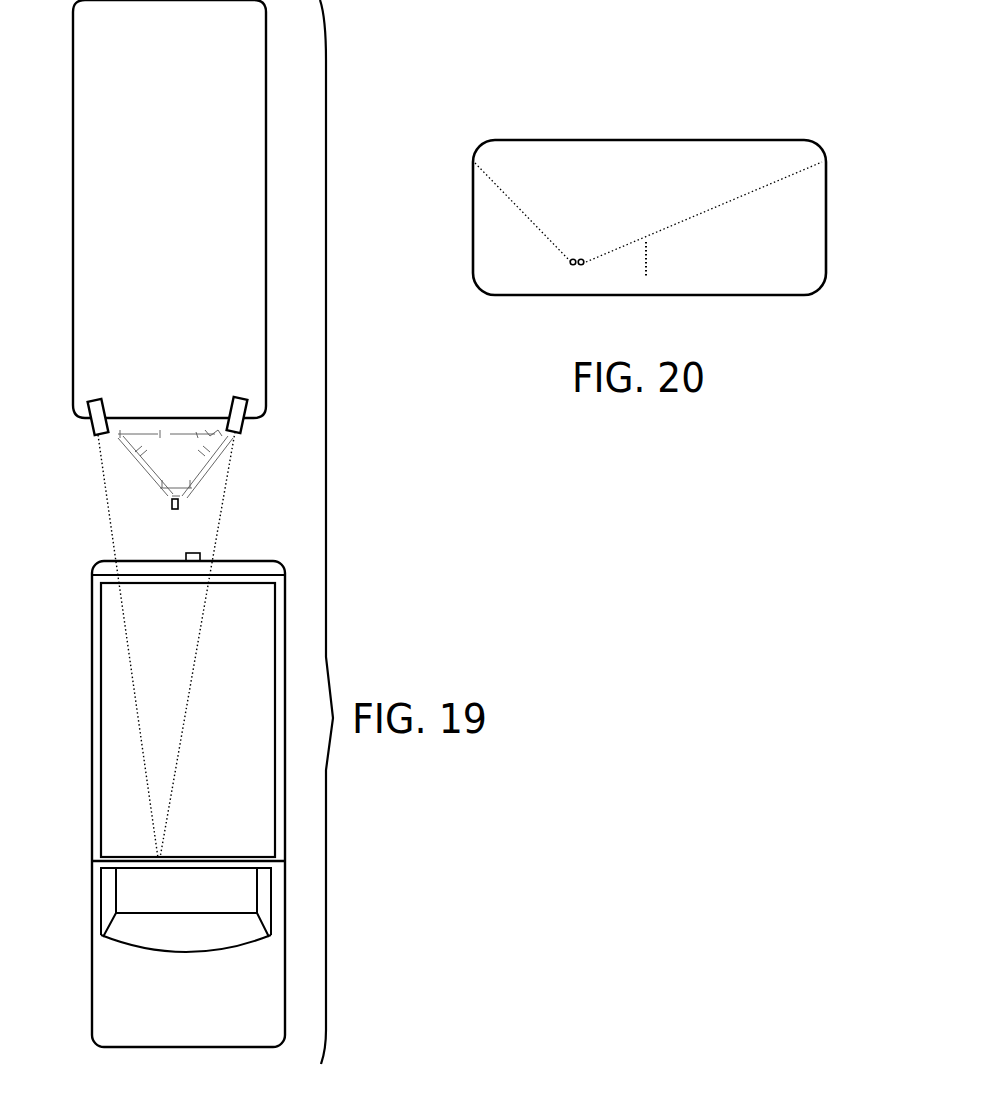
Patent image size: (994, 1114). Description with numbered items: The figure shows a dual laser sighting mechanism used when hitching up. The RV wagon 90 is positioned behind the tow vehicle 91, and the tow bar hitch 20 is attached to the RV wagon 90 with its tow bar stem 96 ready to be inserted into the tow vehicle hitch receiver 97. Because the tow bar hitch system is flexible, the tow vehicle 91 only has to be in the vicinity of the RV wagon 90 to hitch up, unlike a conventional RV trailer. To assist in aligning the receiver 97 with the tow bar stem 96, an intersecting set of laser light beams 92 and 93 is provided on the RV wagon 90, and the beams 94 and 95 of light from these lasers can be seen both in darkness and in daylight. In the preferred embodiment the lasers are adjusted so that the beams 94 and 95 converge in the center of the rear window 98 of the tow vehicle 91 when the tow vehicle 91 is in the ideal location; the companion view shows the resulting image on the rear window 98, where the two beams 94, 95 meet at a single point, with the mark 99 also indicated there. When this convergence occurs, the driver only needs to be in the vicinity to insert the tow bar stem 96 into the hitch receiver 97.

In FIG. 19, the tow bar hitch 20 is at (222, 481).
In FIG. 19, the RV wagon 90 is at (75, 286).
In FIG. 19, the tow vehicle 91 is at (92, 740).
In FIG. 19, the laser light beam 92 is at (258, 411).
In FIG. 19, the laser light beam 93 is at (80, 410).
In FIG. 19, the beam of light 94 is at (218, 535).
In FIG. 20, the beam of light 94 is at (765, 187).
In FIG. 19, the beam of light 95 is at (115, 546).
In FIG. 20, the beam of light 95 is at (508, 187).
In FIG. 19, the tow bar stem 96 is at (172, 501).
In FIG. 19, the tow vehicle hitch receiver 97 is at (186, 557).
In FIG. 19, the rear window 98 is at (137, 857).
In FIG. 20, the rear window 98 is at (637, 137).
In FIG. 20, the reflected beam 99 is at (646, 273).